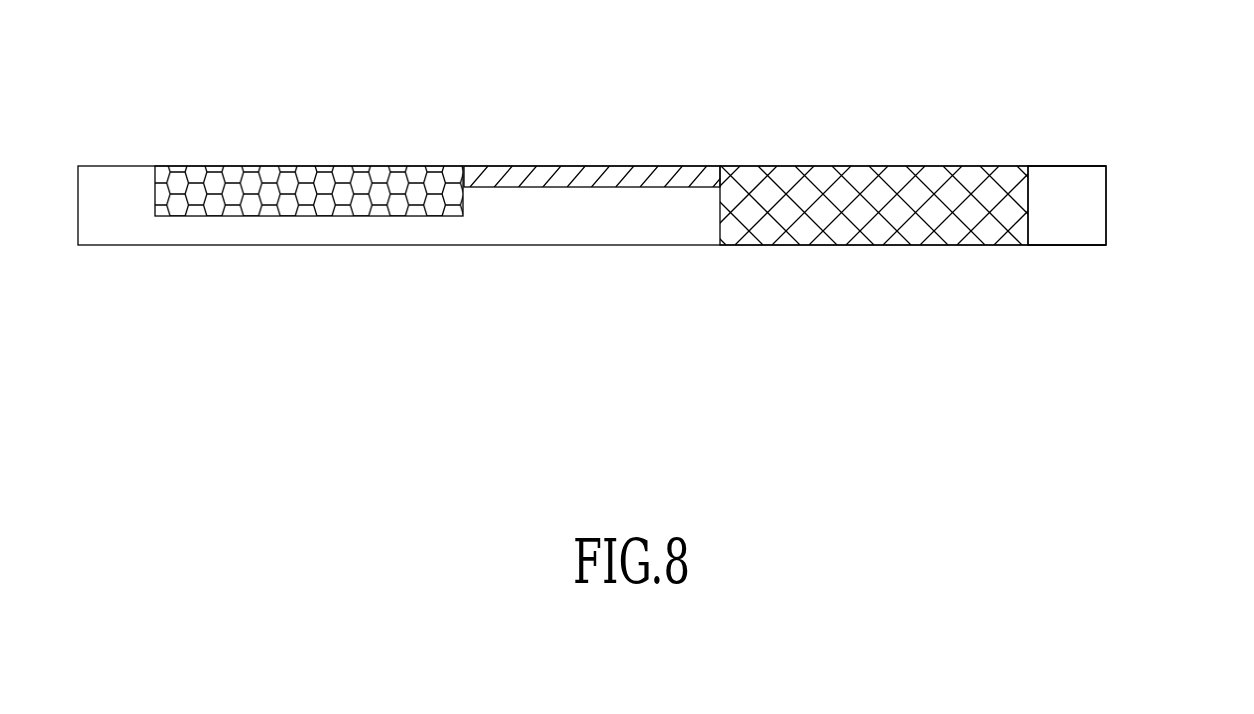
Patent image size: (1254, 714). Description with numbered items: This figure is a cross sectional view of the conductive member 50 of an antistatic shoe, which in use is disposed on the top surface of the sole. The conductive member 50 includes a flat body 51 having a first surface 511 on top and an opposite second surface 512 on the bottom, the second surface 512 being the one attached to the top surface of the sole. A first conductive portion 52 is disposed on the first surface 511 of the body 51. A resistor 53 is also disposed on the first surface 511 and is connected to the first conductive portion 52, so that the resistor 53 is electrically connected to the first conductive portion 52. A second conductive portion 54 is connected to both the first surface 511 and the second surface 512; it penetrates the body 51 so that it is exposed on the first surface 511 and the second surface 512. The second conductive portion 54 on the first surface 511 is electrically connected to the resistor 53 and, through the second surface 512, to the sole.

The conductive member 50 is at (1124, 159).
The body 51 is at (1087, 210).
The first surface 511 is at (1063, 167).
The second surface 512 is at (1057, 246).
The first conductive portion 52 is at (260, 182).
The resistor 53 is at (581, 177).
The second conductive portion 54 is at (862, 195).